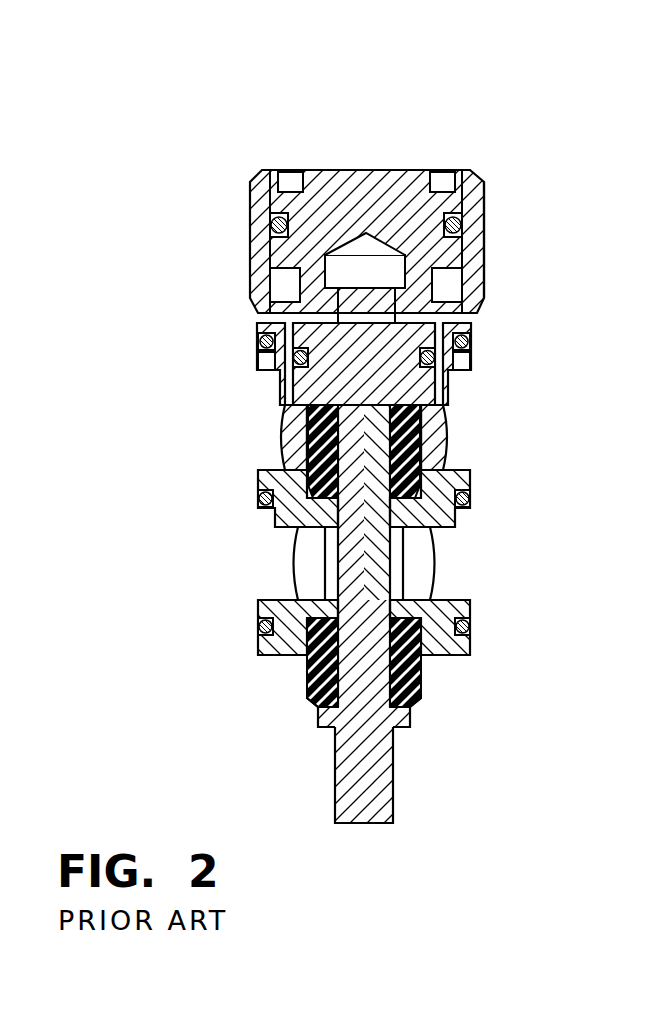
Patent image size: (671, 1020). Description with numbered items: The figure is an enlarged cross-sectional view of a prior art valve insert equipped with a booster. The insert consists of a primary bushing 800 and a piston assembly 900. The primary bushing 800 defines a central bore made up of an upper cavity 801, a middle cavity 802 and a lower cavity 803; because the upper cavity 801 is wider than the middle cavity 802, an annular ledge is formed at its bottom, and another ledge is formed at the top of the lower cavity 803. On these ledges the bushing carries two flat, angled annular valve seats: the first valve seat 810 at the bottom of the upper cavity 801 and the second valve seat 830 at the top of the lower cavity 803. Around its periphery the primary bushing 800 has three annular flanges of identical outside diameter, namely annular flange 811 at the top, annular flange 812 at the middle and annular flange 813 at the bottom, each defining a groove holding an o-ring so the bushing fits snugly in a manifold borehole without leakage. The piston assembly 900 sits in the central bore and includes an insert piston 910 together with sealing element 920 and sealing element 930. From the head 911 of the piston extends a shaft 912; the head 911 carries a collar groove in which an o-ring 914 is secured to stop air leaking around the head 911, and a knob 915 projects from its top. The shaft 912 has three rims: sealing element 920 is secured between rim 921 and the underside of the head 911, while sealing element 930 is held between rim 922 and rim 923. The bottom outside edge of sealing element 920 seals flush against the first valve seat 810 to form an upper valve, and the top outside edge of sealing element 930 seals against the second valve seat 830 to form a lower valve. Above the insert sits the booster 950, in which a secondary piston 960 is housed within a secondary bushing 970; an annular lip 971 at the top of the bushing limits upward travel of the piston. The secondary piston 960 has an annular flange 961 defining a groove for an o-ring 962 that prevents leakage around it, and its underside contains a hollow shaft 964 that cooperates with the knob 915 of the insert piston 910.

The primary bushing 800 is at (232, 343).
The upper cavity 801 is at (294, 411).
The middle cavity 802 is at (262, 518).
The lower cavity 803 is at (470, 655).
The first valve seat 810 is at (444, 465).
The annular flange 811 is at (470, 358).
The annular flange 812 is at (472, 515).
The annular flange 813 is at (470, 608).
The second valve seat 830 is at (307, 665).
The piston assembly 900 is at (436, 777).
The insert piston 910 is at (342, 548).
The head 911 is at (440, 350).
The shaft 912 is at (353, 772).
The o-ring 914 is at (298, 366).
The knob 915 is at (300, 296).
The sealing element 920 is at (446, 423).
The rim 921 is at (434, 542).
The rim 922 is at (300, 597).
The rim 923 is at (404, 728).
The sealing element 930 is at (307, 702).
The booster 950 is at (256, 160).
The secondary piston 960 is at (367, 194).
The annular flange 961 is at (276, 188).
The o-ring 962 is at (272, 226).
The hollow shaft 964 is at (458, 296).
The secondary bushing 970 is at (477, 229).
The annular lip 971 is at (466, 172).